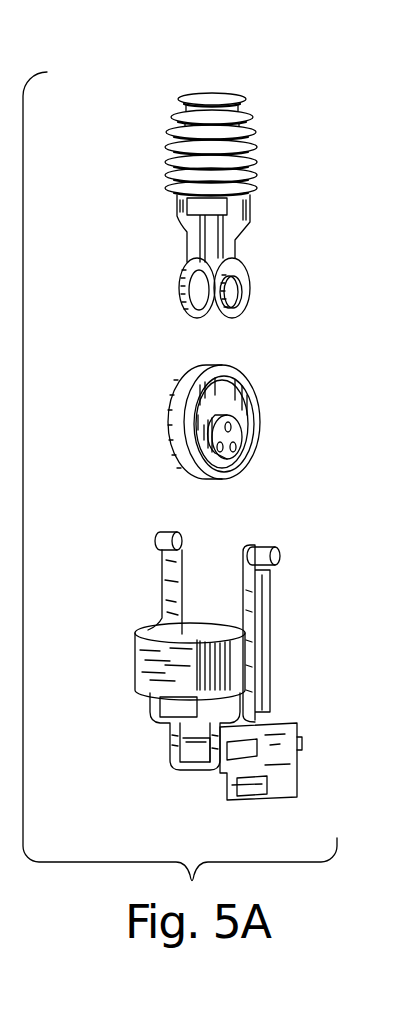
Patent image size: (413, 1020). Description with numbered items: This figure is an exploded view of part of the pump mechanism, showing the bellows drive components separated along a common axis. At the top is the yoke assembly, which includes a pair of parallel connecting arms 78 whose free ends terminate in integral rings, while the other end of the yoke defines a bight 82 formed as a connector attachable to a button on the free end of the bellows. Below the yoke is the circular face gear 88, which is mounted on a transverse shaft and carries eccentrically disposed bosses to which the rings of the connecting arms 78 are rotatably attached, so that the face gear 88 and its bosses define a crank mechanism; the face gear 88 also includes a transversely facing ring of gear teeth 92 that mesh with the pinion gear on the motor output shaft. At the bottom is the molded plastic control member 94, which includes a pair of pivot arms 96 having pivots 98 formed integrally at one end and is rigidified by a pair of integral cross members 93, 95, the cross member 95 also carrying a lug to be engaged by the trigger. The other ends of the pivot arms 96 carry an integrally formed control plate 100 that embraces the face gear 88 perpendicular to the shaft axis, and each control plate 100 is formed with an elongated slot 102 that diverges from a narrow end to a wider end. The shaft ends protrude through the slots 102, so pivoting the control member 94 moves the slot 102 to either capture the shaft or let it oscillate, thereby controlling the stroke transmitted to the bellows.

The connecting arms 78 is at (195, 246).
The face gear 88 is at (247, 393).
The ring of gear teeth 92 is at (188, 400).
The bight 82 is at (192, 456).
The control member 94 is at (124, 689).
The pivot arms 96 is at (165, 588).
The pivots 98 is at (272, 543).
The cross member 93 is at (160, 657).
The elongated slot 102 is at (183, 750).
The control plate 100 is at (207, 773).
The cross member 95 is at (253, 800).